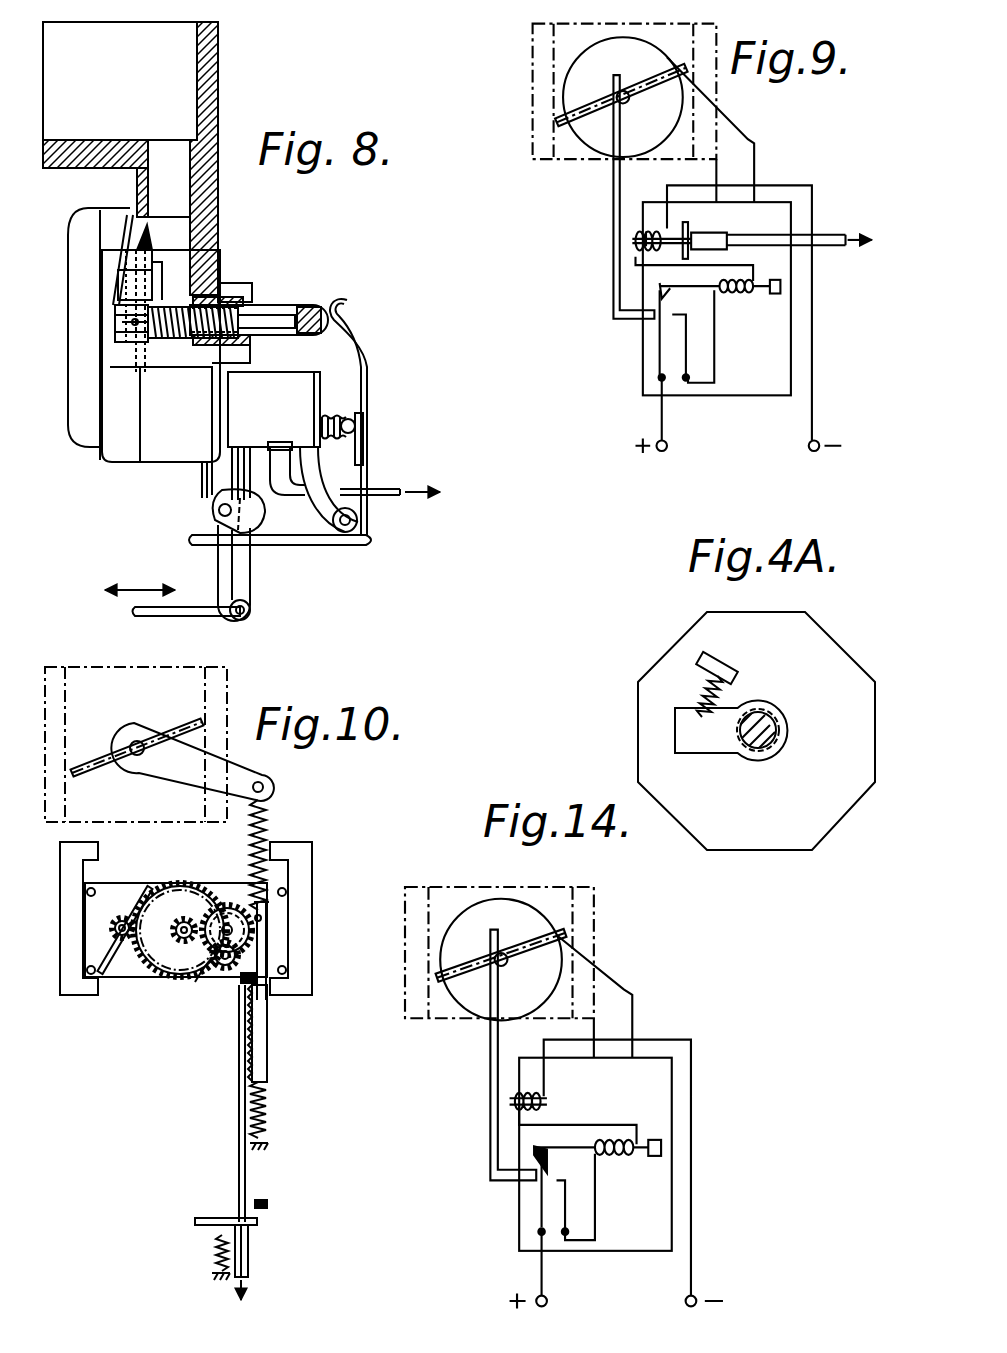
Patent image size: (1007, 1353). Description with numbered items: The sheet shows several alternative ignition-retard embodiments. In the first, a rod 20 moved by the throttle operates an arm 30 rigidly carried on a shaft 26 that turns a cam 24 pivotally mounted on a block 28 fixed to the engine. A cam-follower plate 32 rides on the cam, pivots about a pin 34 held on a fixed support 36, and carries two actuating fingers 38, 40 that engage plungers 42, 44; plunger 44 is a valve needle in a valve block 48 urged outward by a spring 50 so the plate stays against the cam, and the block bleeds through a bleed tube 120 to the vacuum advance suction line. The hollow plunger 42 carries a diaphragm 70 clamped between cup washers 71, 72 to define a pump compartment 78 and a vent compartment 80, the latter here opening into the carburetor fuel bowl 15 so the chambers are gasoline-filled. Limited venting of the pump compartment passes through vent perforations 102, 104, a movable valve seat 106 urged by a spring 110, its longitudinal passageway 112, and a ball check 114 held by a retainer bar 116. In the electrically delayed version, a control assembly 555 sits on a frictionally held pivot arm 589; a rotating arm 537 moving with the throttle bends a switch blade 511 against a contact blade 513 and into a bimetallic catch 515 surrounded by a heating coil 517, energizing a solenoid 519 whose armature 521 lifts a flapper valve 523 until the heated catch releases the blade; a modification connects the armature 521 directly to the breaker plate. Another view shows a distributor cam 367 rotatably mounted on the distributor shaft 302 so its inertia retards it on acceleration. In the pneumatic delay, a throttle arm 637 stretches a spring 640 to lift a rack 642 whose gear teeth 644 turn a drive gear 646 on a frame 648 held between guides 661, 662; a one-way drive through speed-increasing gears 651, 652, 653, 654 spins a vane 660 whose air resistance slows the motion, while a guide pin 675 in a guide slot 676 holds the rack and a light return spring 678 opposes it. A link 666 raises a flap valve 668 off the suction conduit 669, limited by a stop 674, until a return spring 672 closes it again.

In FIG. 8, the fuel bowl 15 is at (210, 105).
In FIG. 8, the vent compartment 80 is at (178, 185).
In FIG. 8, the pump compartment 78 is at (120, 245).
In FIG. 8, the cup washer 72 is at (128, 290).
In FIG. 8, the diaphragm 70 is at (150, 232).
In FIG. 8, the cup washer 71 is at (147, 297).
In FIG. 8, the vent perforation 104 is at (176, 275).
In FIG. 8, the longitudinal passageway 112 is at (173, 281).
In FIG. 8, the vent perforation 102 is at (163, 345).
In FIG. 8, the movable valve seat 106 is at (200, 340).
In FIG. 8, the ball check 114 is at (137, 322).
In FIG. 8, the retainer bar 116 is at (130, 325).
In FIG. 8, the spring 110 is at (232, 294).
In FIG. 8, the plunger 42 is at (288, 306).
In FIG. 8, the valve block 48 is at (295, 382).
In FIG. 8, the actuating finger 38 is at (370, 368).
In FIG. 8, the actuating finger 40 is at (352, 416).
In FIG. 8, the plunger 44 is at (355, 423).
In FIG. 8, the spring 50 is at (368, 455).
In FIG. 8, the fixed support 36 is at (335, 498).
In FIG. 8, the bleed tube 120 is at (390, 498).
In FIG. 8, the cam-follower plate 32 is at (310, 546).
In FIG. 8, the pin 34 is at (345, 532).
In FIG. 8, the block 28 is at (205, 482).
In FIG. 8, the shaft 26 is at (219, 510).
In FIG. 8, the cam 24 is at (255, 518).
In FIG. 8, the arm 30 is at (250, 596).
In FIG. 8, the rod 20 is at (222, 616).
In FIG. 9, the rotating arm 537 is at (612, 292).
In FIG. 9, the pivot arm 589 is at (742, 172).
In FIG. 9, the control assembly 555 is at (782, 218).
In FIG. 9, the armature 521 is at (630, 230).
In FIG. 9, the solenoid 519 is at (643, 220).
In FIG. 9, the flapper valve 523 is at (700, 226).
In FIG. 9, the bimetallic catch 515 is at (650, 273).
In FIG. 9, the heating coil 517 is at (740, 282).
In FIG. 9, the switch blade 511 is at (653, 350).
In FIG. 9, the contact blade 513 is at (680, 350).
In FIG. 4A, the cam 367 is at (845, 650).
In FIG. 4A, the distributor shaft 302 is at (758, 740).
In FIG. 10, the throttle arm 637 is at (190, 765).
In FIG. 10, the spring 640 is at (265, 855).
In FIG. 10, the guide 662 is at (65, 862).
In FIG. 10, the guide 661 is at (303, 858).
In FIG. 10, the rack 642 is at (262, 950).
In FIG. 10, the speed-increasing gear 653 is at (185, 895).
In FIG. 10, the vane 660 is at (150, 905).
In FIG. 10, the speed-increasing gear 652 is at (210, 905).
In FIG. 10, the drive gear 646 is at (222, 972).
In FIG. 10, the frame 648 is at (120, 902).
In FIG. 10, the speed-increasing gear 654 is at (115, 930).
In FIG. 10, the guide pin 675 is at (268, 915).
In FIG. 10, the gear teeth 644 is at (260, 988).
In FIG. 10, the speed-increasing gear 651 is at (195, 984).
In FIG. 10, the guide slot 676 is at (270, 1027).
In FIG. 10, the return spring 678 is at (268, 1100).
In FIG. 10, the link 666 is at (246, 1172).
In FIG. 10, the stop 674 is at (270, 1202).
In FIG. 10, the flap valve 668 is at (200, 1220).
In FIG. 10, the suction conduit 669 is at (250, 1260).
In FIG. 10, the return spring 672 is at (216, 1250).